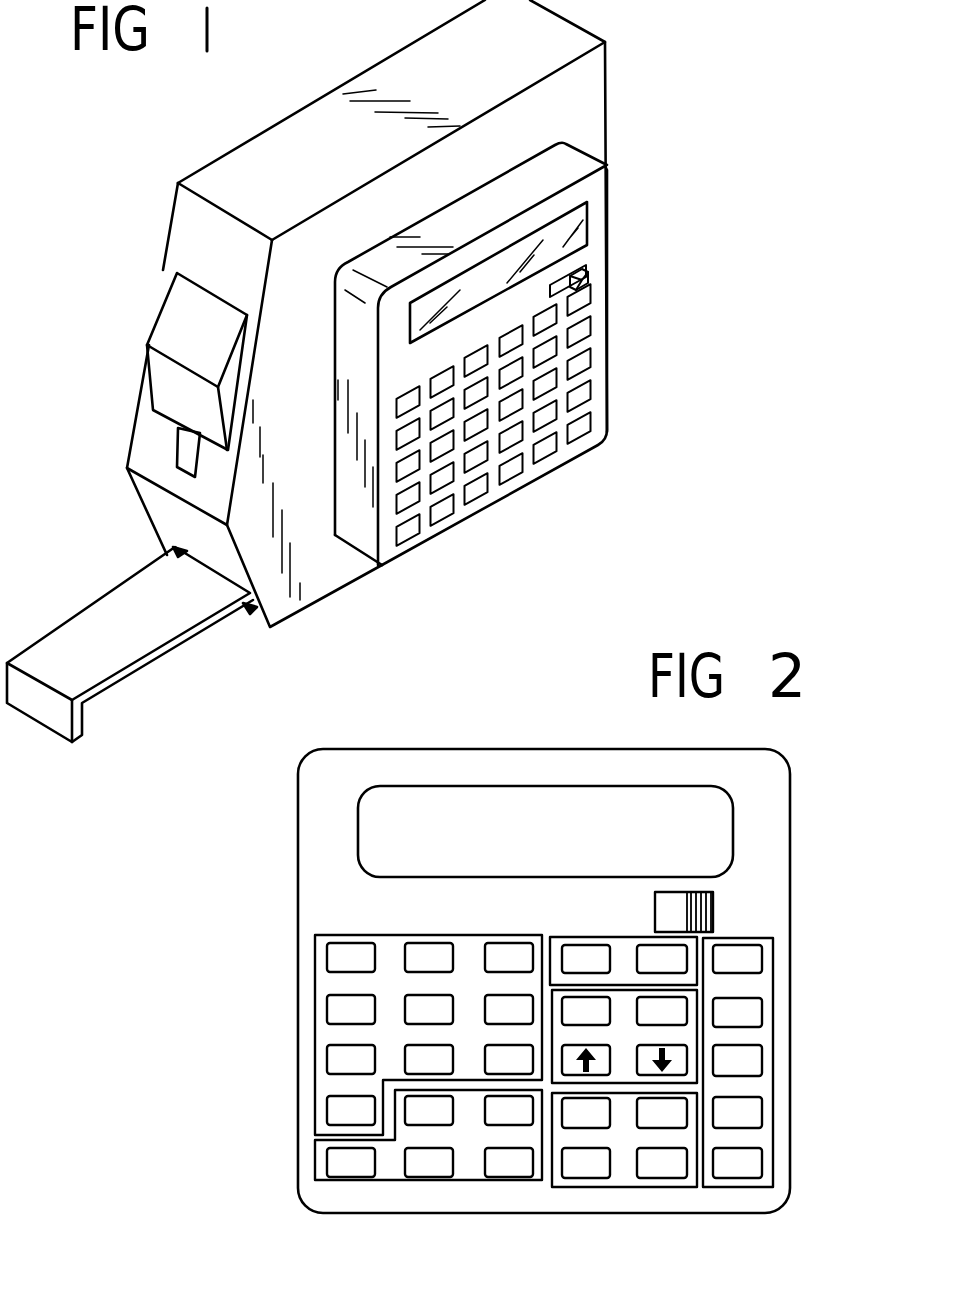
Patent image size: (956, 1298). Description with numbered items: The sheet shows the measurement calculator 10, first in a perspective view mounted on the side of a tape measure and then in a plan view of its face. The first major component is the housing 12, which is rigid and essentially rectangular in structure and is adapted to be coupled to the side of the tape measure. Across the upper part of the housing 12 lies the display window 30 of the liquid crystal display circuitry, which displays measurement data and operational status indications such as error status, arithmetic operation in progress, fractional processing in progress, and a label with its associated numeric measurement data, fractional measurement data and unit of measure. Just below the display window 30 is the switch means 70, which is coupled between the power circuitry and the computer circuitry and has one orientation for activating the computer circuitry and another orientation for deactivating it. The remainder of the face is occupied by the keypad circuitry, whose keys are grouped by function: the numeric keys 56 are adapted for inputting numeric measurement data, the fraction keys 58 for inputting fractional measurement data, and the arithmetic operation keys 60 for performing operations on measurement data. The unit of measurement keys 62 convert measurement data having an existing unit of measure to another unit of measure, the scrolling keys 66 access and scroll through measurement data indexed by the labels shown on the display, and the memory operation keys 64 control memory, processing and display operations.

In FIG. 1, the measurement calculator 10 is at (602, 238).
In FIG. 2, the housing 12 is at (610, 757).
In FIG. 2, the display window 30 is at (732, 817).
In FIG. 2, the switch means 70 is at (713, 897).
In FIG. 2, the numeric keys 56 is at (317, 1024).
In FIG. 2, the fraction keys 58 is at (317, 1163).
In FIG. 2, the unit of measurement keys 62 is at (590, 937).
In FIG. 2, the scrolling keys 66 is at (623, 1083).
In FIG. 2, the memory operation keys 64 is at (602, 1187).
In FIG. 2, the arithmetic operation keys 60 is at (773, 993).